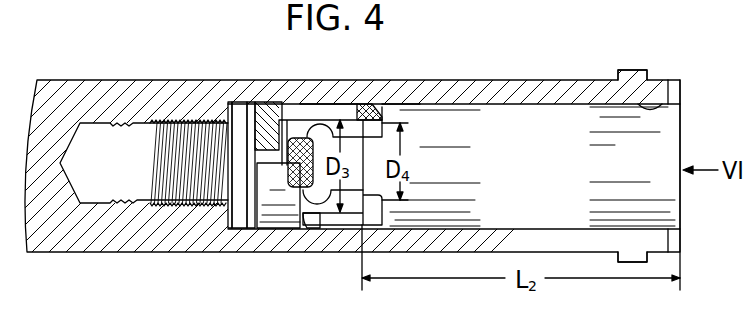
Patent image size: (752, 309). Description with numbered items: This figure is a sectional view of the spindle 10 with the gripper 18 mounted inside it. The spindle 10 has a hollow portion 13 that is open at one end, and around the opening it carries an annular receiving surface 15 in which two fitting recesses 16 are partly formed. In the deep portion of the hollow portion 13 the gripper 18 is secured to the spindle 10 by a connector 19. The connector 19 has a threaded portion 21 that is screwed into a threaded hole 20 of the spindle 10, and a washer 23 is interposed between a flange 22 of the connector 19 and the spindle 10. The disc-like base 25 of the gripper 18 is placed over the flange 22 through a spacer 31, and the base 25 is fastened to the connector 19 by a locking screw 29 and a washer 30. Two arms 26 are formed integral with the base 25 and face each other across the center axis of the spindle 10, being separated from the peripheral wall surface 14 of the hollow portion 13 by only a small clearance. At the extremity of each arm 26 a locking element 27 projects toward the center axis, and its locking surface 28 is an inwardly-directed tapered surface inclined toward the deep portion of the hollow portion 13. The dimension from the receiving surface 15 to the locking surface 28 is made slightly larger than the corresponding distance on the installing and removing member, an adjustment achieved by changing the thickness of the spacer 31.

The spindle 10 is at (323, 88).
The hollow portion 13 is at (667, 147).
The peripheral wall surface 14 is at (652, 108).
The receiving surface 15 is at (681, 85).
The fitting recesses 16 is at (671, 80).
The gripper 18 is at (390, 116).
The connector 19 is at (160, 122).
The threaded hole 20 is at (163, 205).
The threaded portion 21 is at (205, 195).
The flange 22 is at (250, 103).
The washer 23 is at (230, 103).
The base 25 is at (267, 115).
The arms 26 is at (368, 105).
The locking element 27 is at (400, 121).
The locking surface 28 is at (392, 104).
The locking screw 29 is at (347, 104).
The washer 30 is at (287, 117).
The spacer 31 is at (240, 115).